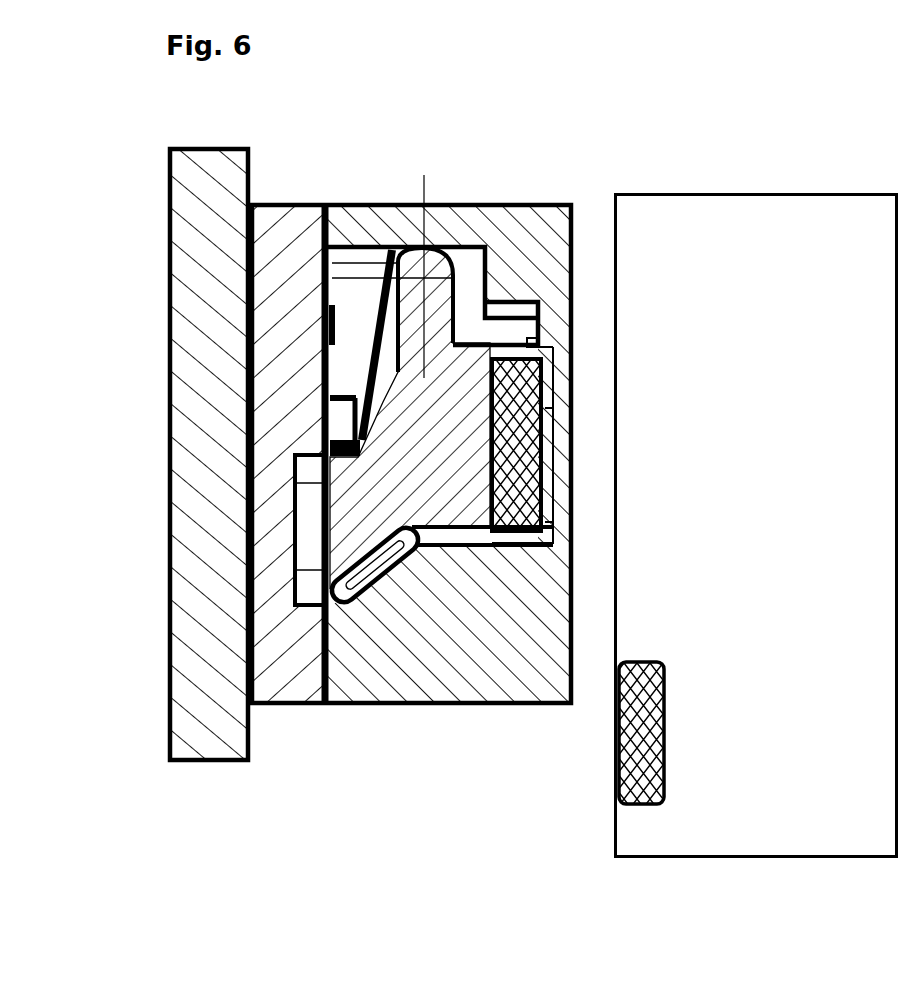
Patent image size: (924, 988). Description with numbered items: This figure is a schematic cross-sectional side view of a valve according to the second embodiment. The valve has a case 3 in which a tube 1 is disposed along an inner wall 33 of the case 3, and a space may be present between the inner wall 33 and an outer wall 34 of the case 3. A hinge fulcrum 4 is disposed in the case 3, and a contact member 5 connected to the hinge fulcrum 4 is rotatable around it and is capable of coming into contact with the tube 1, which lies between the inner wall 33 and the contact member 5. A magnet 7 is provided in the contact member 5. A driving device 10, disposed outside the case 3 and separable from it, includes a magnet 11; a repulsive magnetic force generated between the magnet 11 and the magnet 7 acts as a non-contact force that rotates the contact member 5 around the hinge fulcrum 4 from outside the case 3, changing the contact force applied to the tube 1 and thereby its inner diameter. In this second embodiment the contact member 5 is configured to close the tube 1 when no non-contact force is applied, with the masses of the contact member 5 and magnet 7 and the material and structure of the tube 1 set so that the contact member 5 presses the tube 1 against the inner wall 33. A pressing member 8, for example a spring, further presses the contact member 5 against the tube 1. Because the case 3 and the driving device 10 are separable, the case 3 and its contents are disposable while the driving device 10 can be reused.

The tube 1 is at (365, 575).
The case 3 is at (438, 204).
The hinge fulcrum 4 is at (447, 270).
The contact member 5 is at (365, 480).
The magnet 7 is at (520, 497).
The pressing member 8 is at (317, 247).
The driving device 10 is at (817, 852).
The magnet 11 is at (650, 660).
The inner wall 33 is at (403, 575).
The outer wall 34 is at (257, 650).